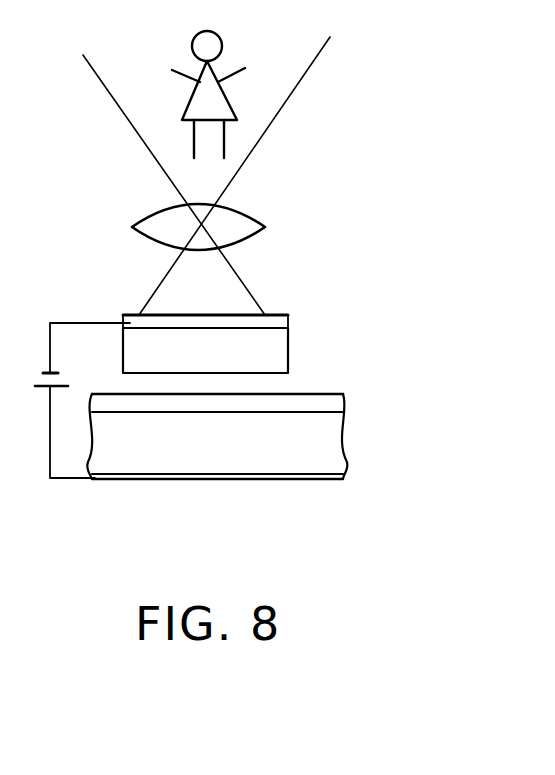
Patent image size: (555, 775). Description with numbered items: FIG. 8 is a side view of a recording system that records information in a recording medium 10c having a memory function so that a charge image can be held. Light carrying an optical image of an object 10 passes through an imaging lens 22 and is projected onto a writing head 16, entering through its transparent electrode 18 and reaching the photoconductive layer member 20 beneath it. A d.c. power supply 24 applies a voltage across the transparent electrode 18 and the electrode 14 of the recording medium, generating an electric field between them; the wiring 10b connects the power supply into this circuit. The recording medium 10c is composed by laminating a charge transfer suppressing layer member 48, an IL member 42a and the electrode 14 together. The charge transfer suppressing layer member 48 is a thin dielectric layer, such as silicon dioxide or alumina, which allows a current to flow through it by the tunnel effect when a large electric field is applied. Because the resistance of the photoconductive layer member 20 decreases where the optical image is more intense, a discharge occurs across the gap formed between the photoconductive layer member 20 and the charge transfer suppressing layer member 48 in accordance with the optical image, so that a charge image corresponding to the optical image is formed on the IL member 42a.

The object being imaged 10 is at (230, 60).
The imaging lens 22 is at (250, 222).
The writing head 16 is at (197, 310).
The transparent electrode 18 is at (276, 317).
The photoconductive layer member 20 is at (282, 359).
The d.c. power supply 24 is at (34, 383).
The wiring 10b is at (23, 500).
The recording medium 10c is at (261, 449).
The charge transfer suppressing layer member 48 is at (323, 402).
The IL member 42a is at (322, 435).
The electrode 14 is at (272, 482).